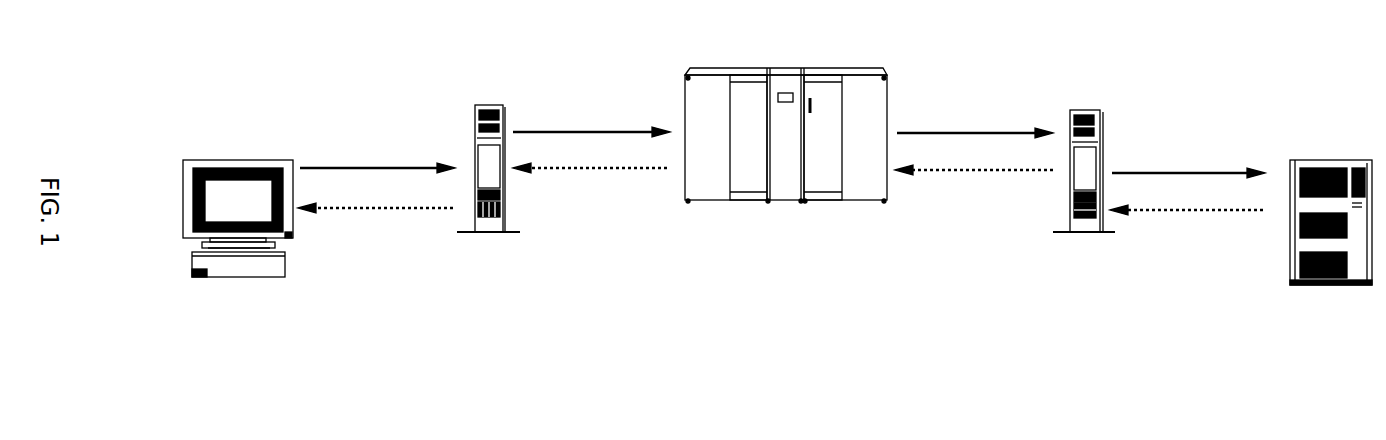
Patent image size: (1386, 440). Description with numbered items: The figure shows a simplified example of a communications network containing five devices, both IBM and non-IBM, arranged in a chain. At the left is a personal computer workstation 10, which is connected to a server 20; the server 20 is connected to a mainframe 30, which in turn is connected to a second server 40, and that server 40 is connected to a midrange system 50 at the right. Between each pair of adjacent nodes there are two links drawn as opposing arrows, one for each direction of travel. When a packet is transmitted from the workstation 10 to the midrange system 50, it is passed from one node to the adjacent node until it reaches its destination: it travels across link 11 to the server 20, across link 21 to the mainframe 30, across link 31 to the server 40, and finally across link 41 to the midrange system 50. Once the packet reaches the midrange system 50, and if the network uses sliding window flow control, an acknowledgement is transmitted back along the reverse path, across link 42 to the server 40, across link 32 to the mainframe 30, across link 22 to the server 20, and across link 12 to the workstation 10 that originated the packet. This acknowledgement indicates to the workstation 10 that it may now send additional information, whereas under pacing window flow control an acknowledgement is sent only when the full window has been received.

The PS/2 10 is at (238, 208).
The link 11 is at (377, 154).
The link 12 is at (375, 193).
The server 20 is at (488, 158).
The link 21 is at (591, 115).
The link 22 is at (590, 156).
The mainframe 30 is at (786, 121).
The link 31 is at (975, 116).
The link 32 is at (974, 158).
The server 40 is at (1081, 159).
The link 41 is at (1188, 159).
The link 42 is at (1186, 195).
The AS/400 50 is at (1323, 219).